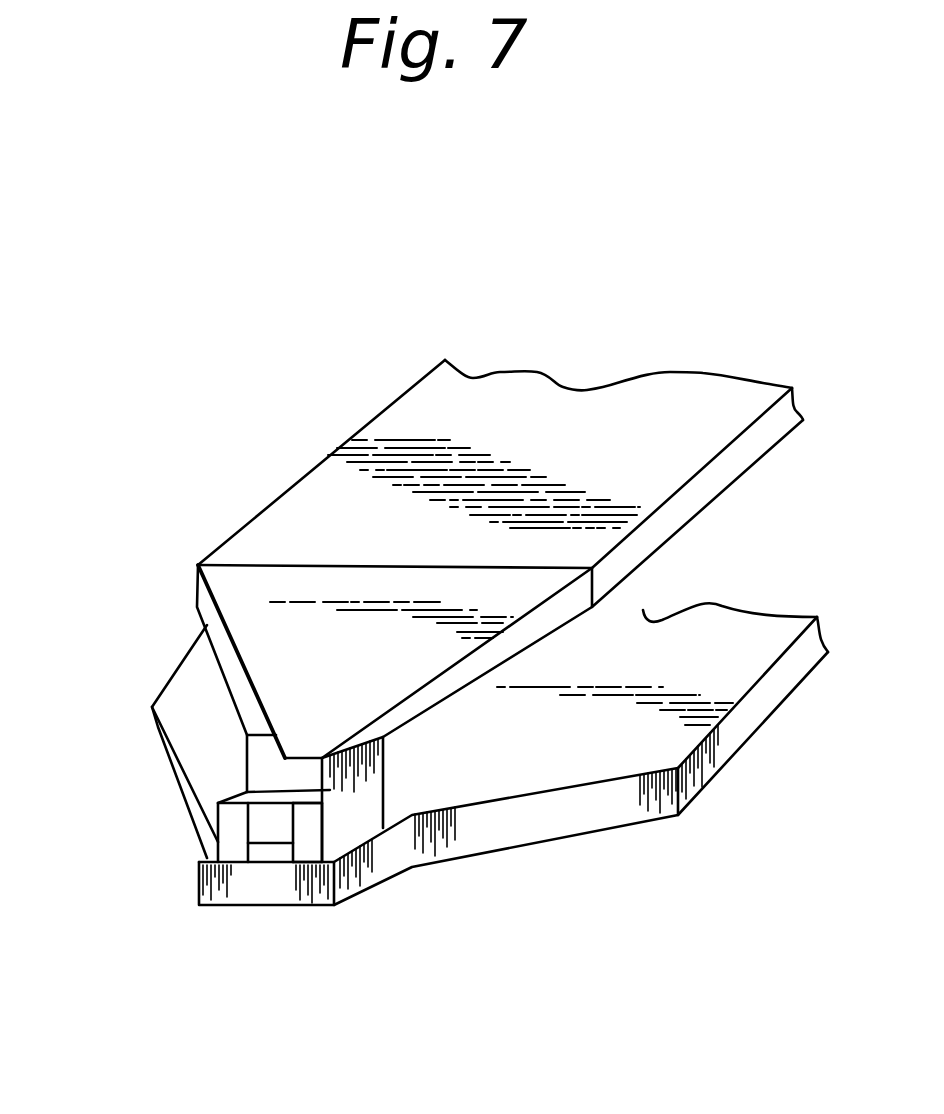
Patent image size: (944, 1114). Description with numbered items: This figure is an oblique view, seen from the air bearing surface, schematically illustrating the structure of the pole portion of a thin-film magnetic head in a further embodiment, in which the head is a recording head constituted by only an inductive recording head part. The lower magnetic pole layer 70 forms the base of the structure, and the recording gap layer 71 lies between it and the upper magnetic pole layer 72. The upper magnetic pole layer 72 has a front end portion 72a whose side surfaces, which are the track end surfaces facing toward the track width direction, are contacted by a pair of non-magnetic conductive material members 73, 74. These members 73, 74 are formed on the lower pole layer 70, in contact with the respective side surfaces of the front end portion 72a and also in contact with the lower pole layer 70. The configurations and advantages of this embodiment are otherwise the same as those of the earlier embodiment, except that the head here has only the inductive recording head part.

The lower magnetic pole layer 70 is at (370, 876).
The recording gap layer 71 is at (267, 852).
The upper magnetic pole layer 72 is at (272, 670).
The front end portion of the upper pole layer 72a is at (292, 787).
The non-magnetic conductive material member 73 is at (230, 840).
The non-magnetic conductive material member 74 is at (310, 843).